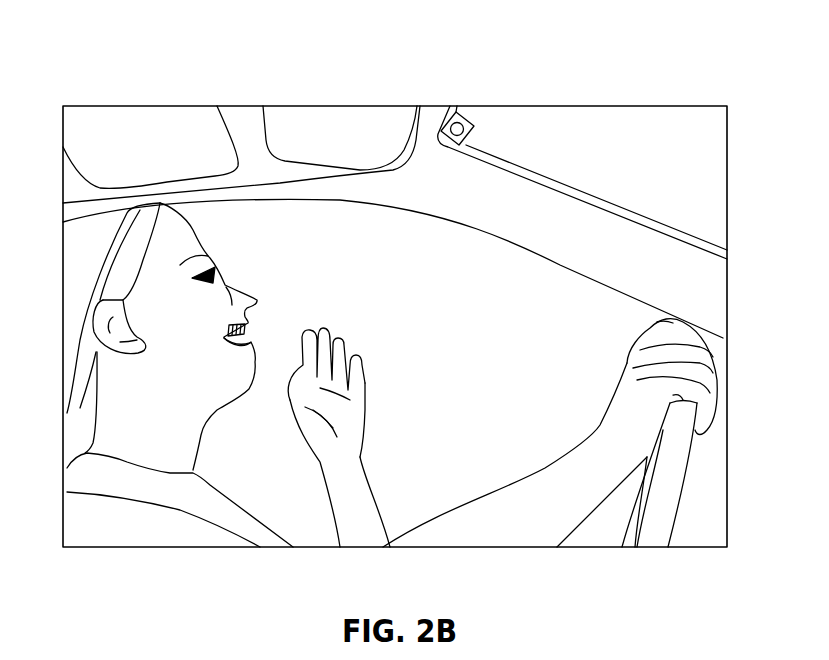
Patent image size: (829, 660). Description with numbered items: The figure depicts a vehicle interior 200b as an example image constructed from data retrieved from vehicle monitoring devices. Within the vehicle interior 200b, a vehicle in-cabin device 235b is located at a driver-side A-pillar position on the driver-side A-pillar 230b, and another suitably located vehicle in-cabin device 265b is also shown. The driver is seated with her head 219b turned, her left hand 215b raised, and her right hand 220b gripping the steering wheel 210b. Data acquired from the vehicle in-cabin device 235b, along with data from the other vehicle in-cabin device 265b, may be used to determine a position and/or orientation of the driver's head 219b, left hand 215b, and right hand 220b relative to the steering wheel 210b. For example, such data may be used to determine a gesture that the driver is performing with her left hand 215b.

The vehicle interior 200b is at (94, 52).
The steering wheel 210b is at (668, 489).
The driver's left hand 215b is at (367, 413).
The driver's head 219b is at (160, 203).
The driver's right hand 220b is at (683, 376).
The driver-side A-pillar 230b is at (573, 240).
The vehicle in-cabin device 235b is at (478, 128).
The vehicle in-cabin device 265b is at (370, 128).